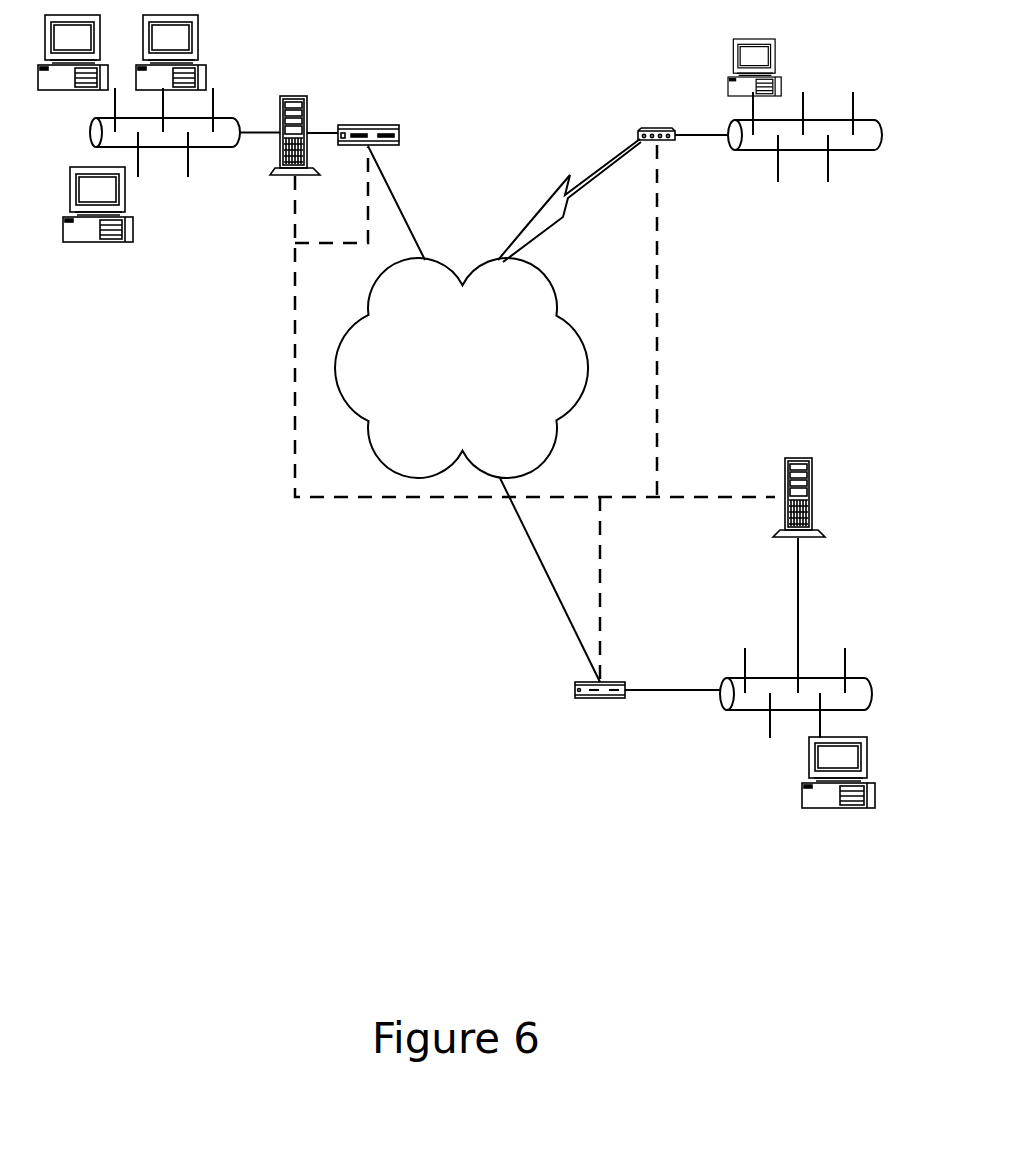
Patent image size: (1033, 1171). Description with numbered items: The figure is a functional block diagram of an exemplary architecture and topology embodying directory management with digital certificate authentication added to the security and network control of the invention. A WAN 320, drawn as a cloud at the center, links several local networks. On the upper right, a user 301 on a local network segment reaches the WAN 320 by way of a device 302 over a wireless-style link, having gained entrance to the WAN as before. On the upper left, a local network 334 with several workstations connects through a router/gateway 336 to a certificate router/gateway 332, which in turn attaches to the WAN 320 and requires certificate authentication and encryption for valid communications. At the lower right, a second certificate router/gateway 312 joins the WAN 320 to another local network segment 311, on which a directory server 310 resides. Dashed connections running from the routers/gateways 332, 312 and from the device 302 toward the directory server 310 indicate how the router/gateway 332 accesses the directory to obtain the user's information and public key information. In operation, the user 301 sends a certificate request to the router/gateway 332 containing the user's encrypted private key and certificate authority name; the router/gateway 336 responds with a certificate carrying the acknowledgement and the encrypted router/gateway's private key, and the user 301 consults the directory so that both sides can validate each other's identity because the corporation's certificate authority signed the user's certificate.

The local area network (LAN) with workstations 334 is at (154, 128).
The router/gateway 336 is at (304, 114).
The certificate router/gateway 332 is at (380, 171).
The WAN 320 is at (461, 368).
The router 302 is at (613, 180).
The user 301 is at (805, 93).
The directory server 310 is at (840, 557).
The certificate router/gateway 312 is at (610, 609).
The local area network with workstation 311 is at (819, 728).